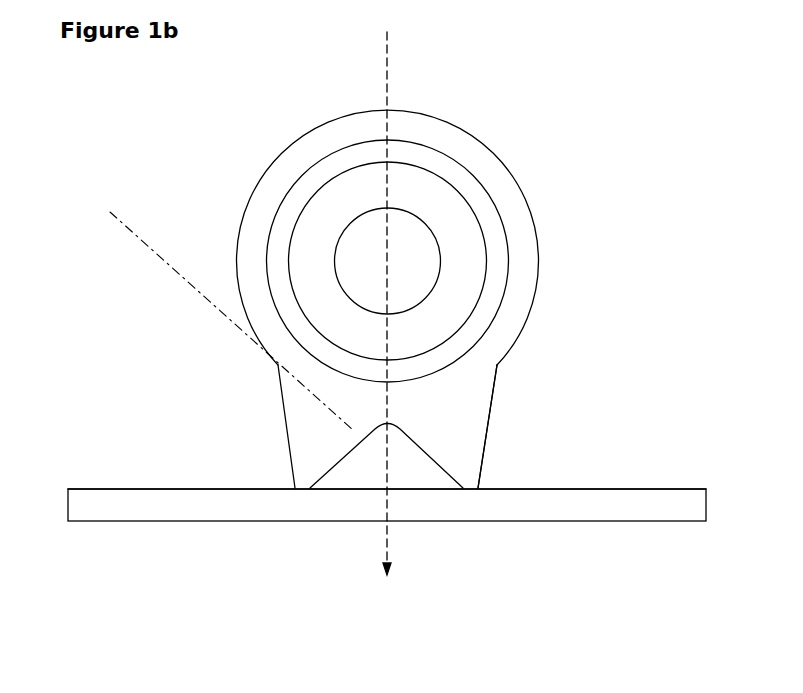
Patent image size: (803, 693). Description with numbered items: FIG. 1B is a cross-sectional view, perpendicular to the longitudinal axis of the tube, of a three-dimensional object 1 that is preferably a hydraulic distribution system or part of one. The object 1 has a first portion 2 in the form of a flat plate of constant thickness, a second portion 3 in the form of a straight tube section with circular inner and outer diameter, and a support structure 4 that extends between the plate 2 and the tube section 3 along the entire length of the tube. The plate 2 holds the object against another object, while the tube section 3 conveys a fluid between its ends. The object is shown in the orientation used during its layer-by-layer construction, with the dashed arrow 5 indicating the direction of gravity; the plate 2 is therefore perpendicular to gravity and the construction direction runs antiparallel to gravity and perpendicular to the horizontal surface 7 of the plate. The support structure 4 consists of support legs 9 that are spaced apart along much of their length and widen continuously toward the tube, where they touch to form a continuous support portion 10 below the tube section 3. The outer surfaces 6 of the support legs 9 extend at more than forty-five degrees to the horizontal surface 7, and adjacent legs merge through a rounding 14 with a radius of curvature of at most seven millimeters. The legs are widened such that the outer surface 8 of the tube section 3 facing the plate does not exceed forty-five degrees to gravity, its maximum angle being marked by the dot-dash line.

The three-dimensional object 1 is at (543, 120).
The first portion 2 is at (145, 519).
The second portion 3 is at (280, 175).
The support structure 4 is at (517, 430).
The dashed arrow 5 is at (385, 87).
The outer surfaces 6 is at (287, 410).
The horizontal surface 7 is at (138, 488).
The outer surface 8 is at (250, 322).
The support legs 9 is at (308, 453).
The continuous support portion 10 is at (397, 402).
The rounding 14 is at (398, 427).